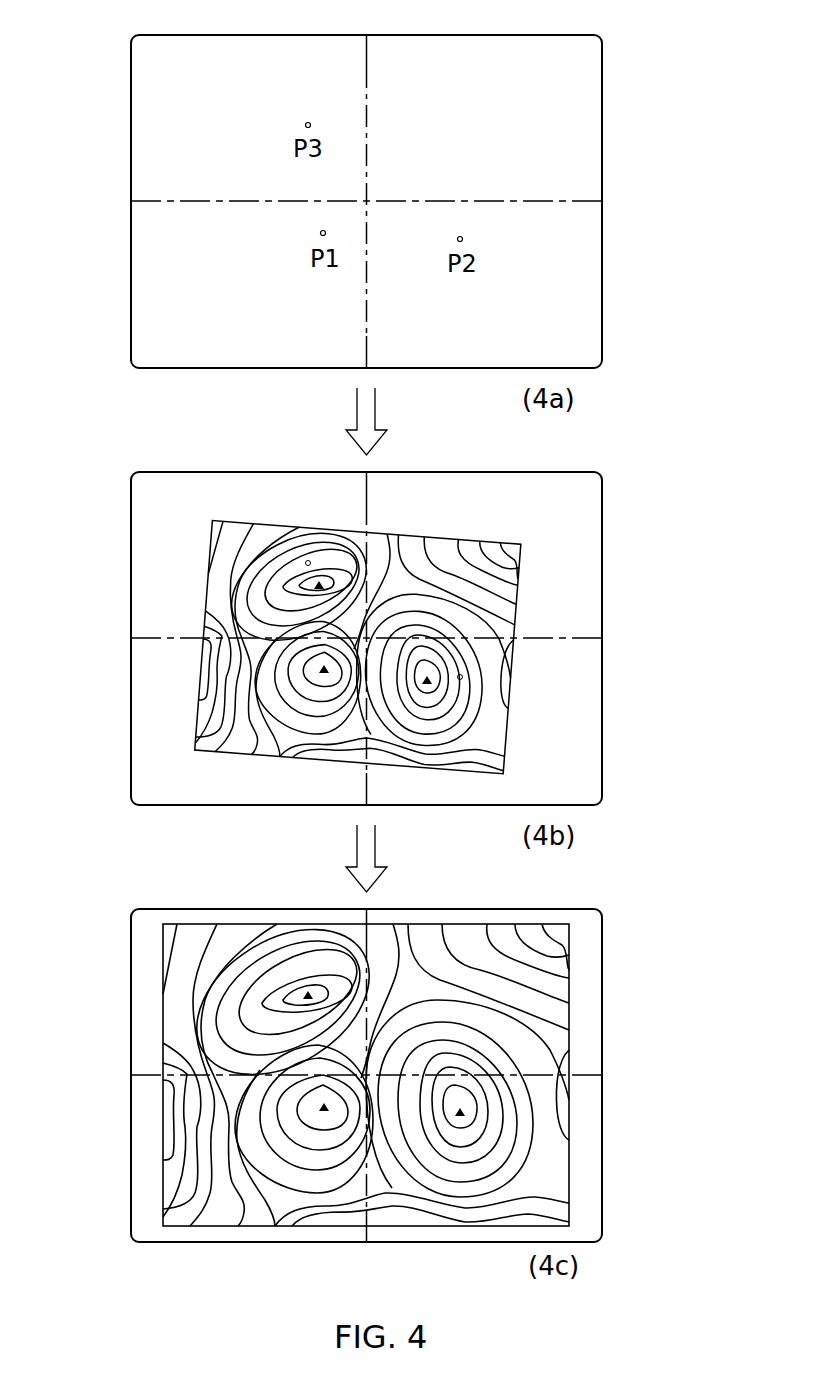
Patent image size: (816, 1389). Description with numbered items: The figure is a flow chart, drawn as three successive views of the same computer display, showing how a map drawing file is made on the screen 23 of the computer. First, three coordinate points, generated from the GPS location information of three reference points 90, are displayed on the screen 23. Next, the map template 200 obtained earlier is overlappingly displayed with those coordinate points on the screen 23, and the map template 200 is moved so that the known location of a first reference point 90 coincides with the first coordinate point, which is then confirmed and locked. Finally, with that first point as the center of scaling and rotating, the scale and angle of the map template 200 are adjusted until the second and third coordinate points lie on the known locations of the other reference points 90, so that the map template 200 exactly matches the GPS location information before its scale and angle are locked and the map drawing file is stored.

The screen 23 is at (602, 108).
The map template 200 is at (203, 592).
The reference points 90 is at (293, 578).